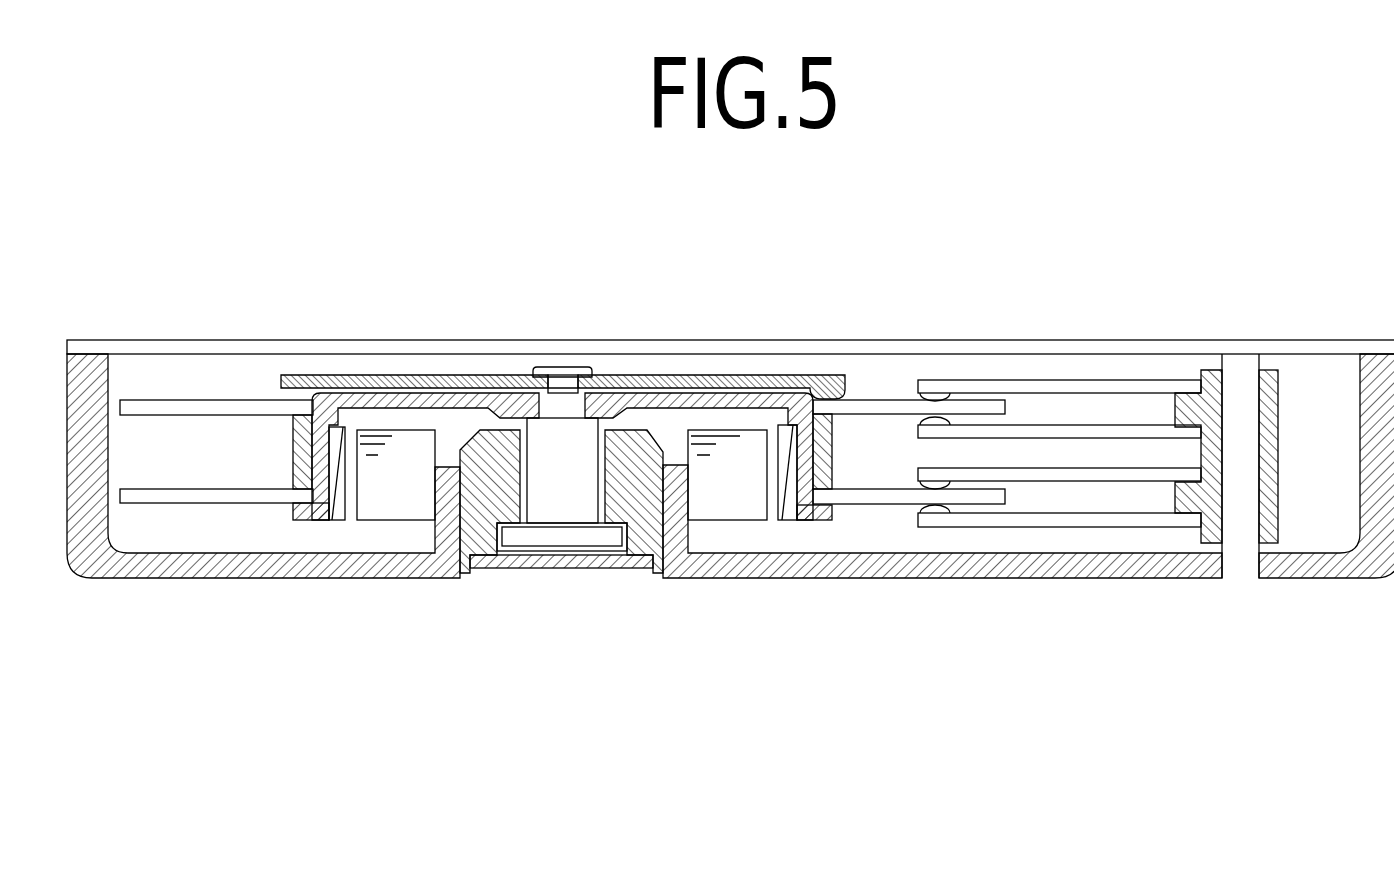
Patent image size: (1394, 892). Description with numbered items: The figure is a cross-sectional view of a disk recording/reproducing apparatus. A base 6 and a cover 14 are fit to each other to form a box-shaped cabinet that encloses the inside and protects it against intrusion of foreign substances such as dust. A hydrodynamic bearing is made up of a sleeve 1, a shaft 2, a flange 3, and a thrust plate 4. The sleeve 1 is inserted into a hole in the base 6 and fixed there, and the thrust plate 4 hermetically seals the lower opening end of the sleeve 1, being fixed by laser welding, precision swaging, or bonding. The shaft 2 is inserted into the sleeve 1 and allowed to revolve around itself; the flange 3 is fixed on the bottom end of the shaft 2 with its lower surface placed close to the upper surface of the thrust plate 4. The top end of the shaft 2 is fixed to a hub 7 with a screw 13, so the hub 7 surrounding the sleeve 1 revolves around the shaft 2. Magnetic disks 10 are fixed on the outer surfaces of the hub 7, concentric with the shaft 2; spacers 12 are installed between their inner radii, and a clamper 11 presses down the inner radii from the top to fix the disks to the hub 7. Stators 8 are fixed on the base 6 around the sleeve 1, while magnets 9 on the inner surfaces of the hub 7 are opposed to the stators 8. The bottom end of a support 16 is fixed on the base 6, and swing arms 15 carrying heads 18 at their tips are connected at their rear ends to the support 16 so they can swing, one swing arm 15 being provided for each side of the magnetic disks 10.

The sleeve 1 is at (487, 492).
The shaft 2 is at (563, 475).
The flange 3 is at (558, 537).
The thrust plate 4 is at (562, 543).
The base 6 is at (387, 569).
The hub 7 is at (448, 393).
The stators 8 is at (397, 487).
The magnets 9 is at (340, 510).
The magnetic disks 10 is at (183, 408).
The clamper 11 is at (378, 375).
The spacers 12 is at (293, 453).
The screw 13 is at (566, 370).
The cover 14 is at (857, 347).
The swing arms 15 is at (1093, 387).
The support 16 is at (1240, 383).
The heads 18 is at (933, 390).